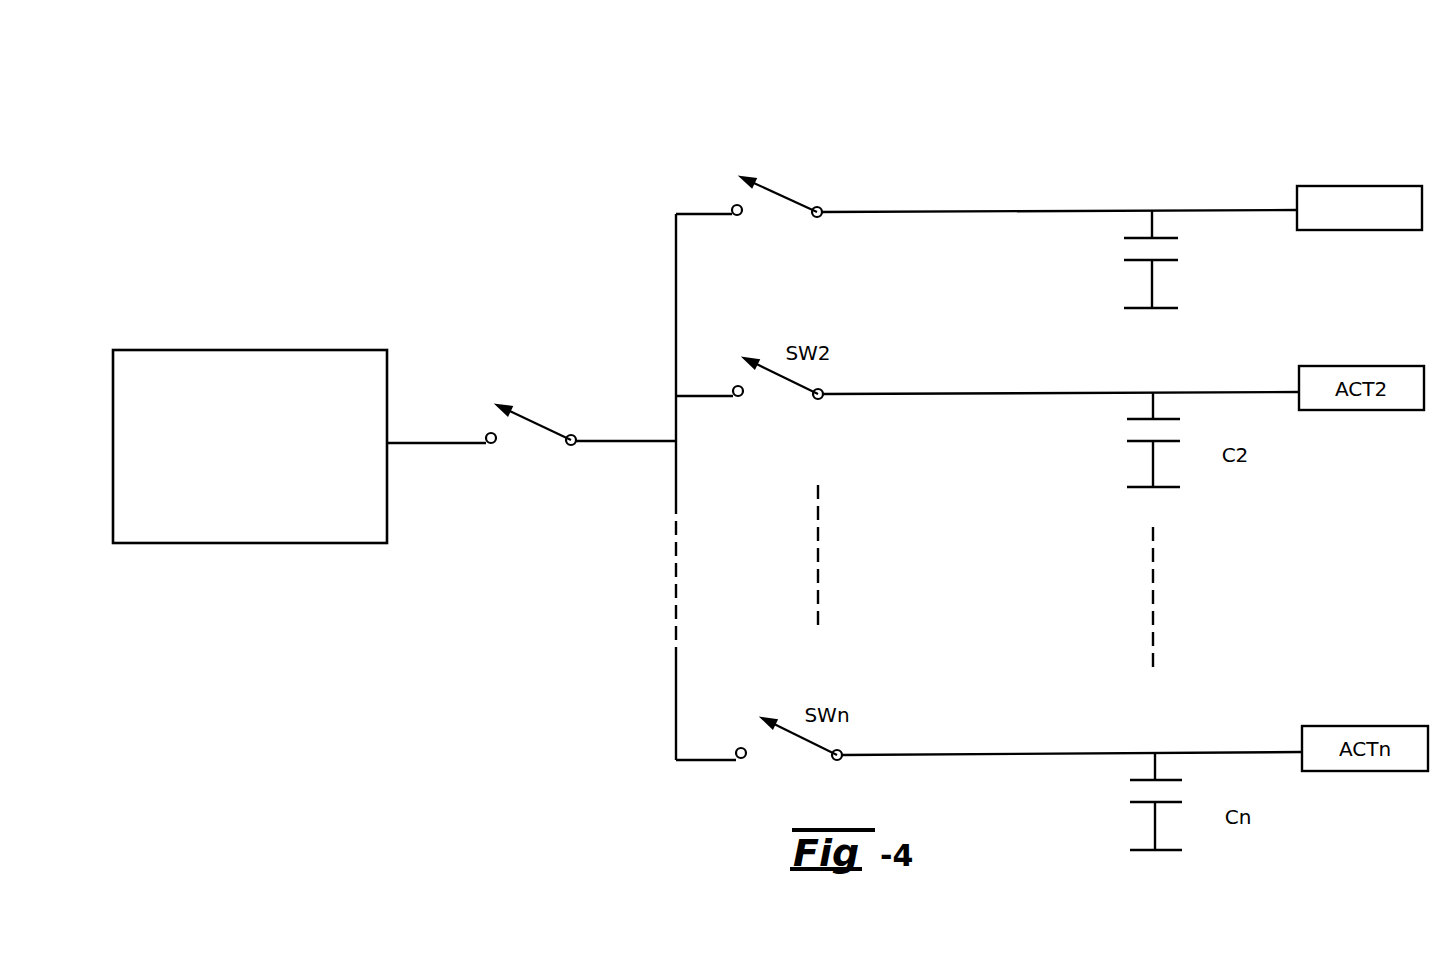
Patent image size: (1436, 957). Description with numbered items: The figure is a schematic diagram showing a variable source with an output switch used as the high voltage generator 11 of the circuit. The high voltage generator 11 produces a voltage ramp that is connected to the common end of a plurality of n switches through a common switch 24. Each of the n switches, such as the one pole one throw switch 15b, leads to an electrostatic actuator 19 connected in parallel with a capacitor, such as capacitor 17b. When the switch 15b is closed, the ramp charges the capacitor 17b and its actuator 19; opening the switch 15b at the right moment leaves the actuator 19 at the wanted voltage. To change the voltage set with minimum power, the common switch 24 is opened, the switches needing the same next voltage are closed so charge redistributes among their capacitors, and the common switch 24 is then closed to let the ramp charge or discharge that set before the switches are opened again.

The high voltage generator 11 is at (306, 350).
The common switch 24 is at (546, 424).
The one pole one throw switch 15b is at (774, 190).
The capacitor 17b is at (1152, 284).
The electrostatic actuator 19 is at (1360, 186).